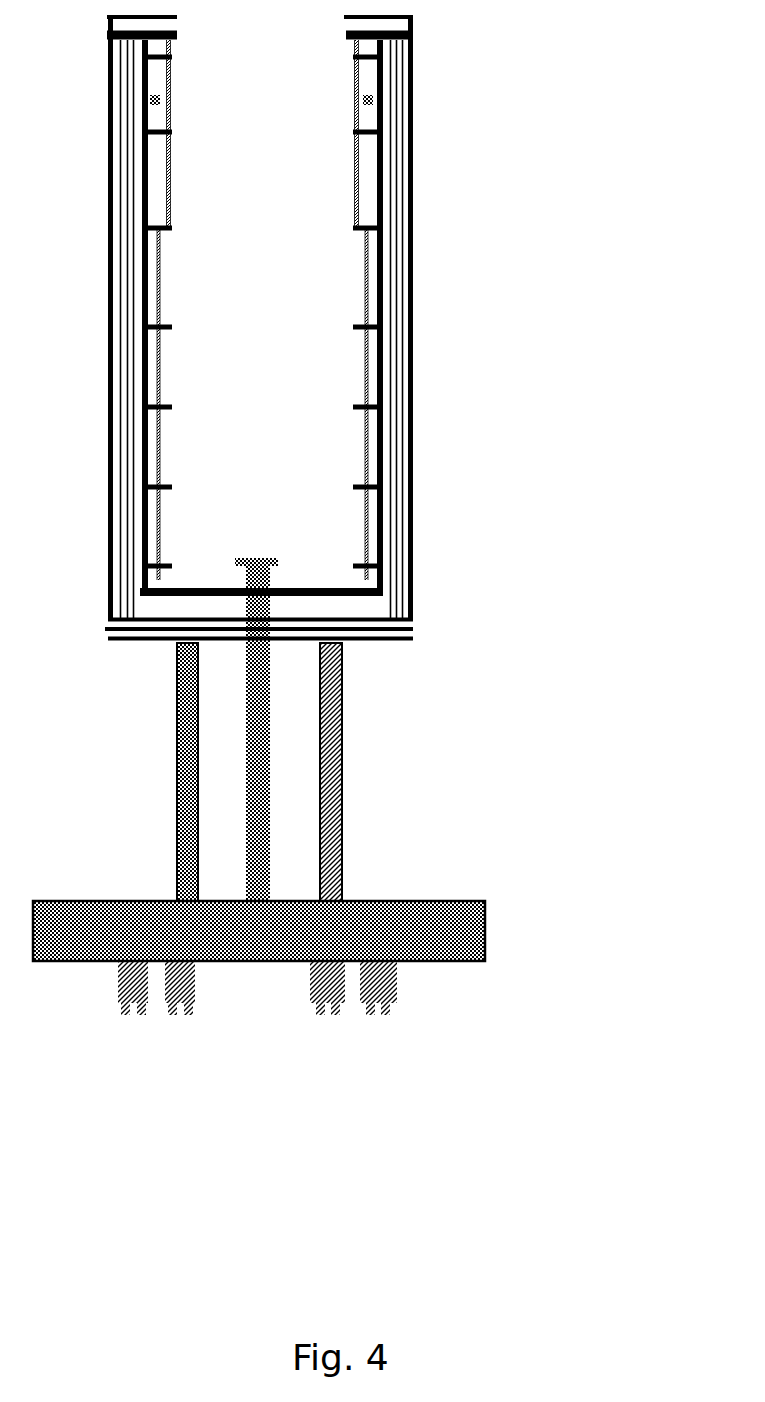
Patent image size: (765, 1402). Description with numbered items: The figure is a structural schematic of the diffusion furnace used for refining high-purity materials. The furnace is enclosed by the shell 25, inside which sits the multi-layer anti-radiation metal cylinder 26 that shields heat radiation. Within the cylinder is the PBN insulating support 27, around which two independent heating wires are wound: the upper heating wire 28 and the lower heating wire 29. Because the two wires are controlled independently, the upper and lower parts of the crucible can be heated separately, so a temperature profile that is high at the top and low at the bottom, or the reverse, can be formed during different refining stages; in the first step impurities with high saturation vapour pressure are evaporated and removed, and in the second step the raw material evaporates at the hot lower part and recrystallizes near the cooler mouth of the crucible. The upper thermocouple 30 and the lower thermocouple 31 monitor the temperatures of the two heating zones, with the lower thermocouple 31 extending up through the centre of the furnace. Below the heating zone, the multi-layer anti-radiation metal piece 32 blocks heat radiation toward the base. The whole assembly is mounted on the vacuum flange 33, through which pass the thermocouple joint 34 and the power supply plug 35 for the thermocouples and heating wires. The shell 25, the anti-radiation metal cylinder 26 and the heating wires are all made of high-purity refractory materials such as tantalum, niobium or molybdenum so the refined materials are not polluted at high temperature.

The shell of the furnace 25 is at (413, 172).
The anti-radiation metal cylinder 26 is at (397, 240).
The PBN insulating support 27 is at (383, 315).
The upper heating wire 28 is at (358, 72).
The lower heating wire 29 is at (367, 445).
The upper thermocouple 30 is at (380, 97).
The lower thermocouple 31 is at (298, 560).
The multi-layer anti-radiation metal piece 32 is at (388, 637).
The vacuum flange 33 is at (478, 912).
The thermocouple joint 34 is at (390, 1008).
The power supply plug 35 is at (190, 1008).